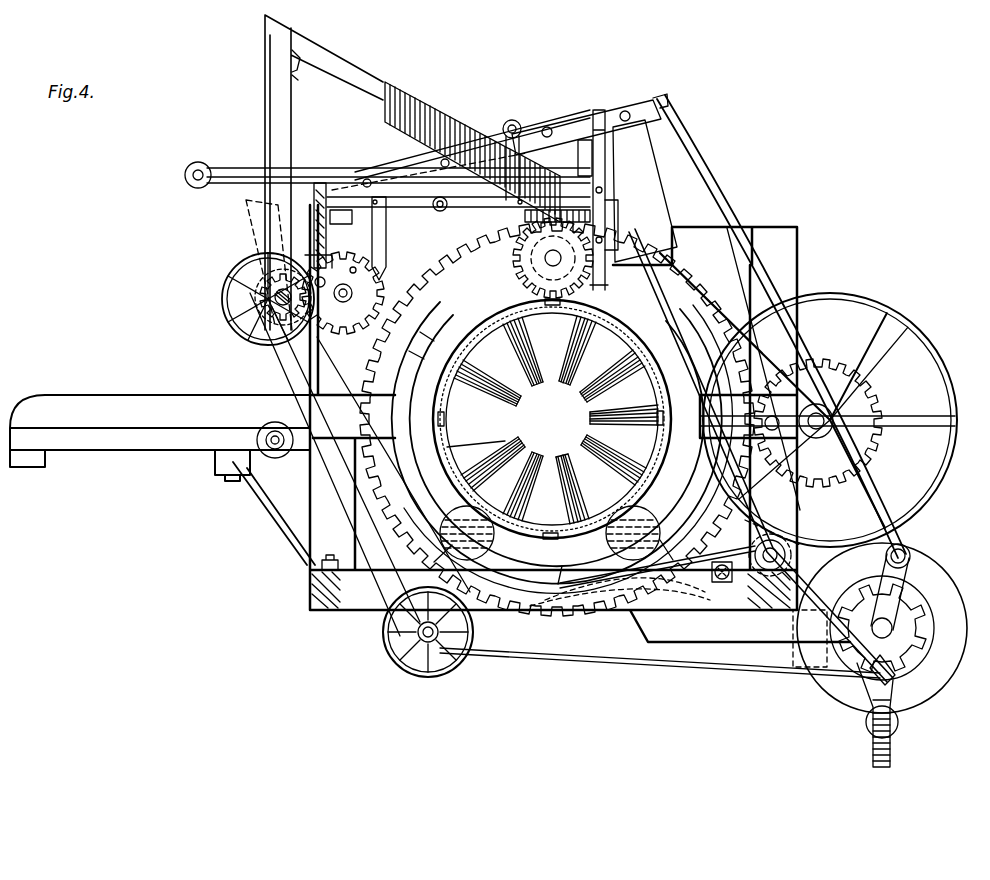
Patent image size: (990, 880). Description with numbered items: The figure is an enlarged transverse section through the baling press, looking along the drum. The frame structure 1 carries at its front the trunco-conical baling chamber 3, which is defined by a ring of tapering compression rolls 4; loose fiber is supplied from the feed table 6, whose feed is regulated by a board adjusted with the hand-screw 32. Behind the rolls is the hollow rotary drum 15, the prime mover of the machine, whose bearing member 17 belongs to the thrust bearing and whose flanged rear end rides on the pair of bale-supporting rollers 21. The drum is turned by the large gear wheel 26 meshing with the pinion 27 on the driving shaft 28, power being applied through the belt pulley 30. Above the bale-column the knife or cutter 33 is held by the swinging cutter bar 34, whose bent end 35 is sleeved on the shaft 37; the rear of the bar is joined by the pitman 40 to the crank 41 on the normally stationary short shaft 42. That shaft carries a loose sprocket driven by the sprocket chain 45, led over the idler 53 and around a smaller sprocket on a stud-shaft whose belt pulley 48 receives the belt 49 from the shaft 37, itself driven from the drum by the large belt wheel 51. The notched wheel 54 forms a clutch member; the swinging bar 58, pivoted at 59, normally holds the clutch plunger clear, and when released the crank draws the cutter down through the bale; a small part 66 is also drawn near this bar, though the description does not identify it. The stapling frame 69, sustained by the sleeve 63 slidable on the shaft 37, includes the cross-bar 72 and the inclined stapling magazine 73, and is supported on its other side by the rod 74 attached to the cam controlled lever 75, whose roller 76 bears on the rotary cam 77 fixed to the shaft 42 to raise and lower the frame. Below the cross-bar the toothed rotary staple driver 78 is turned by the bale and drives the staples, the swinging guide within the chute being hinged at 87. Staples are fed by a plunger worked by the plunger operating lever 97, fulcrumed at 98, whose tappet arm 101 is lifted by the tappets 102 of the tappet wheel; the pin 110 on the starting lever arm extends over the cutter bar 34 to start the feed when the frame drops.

The frame structure 1 is at (580, 421).
The baling chamber 3 is at (552, 419).
The compression rolls 4 is at (552, 420).
The feed table 6 is at (160, 426).
The rotary drum 15 is at (660, 330).
The bearing member 17 is at (405, 360).
The bale-supporting rollers 21 is at (495, 540).
The gear wheel 26 is at (735, 310).
The pinion 27 is at (832, 360).
The driving shaft 28 is at (840, 415).
The belt pulley 30 is at (868, 300).
The hand-screw 32 is at (262, 430).
The knife or cutter 33 is at (606, 152).
The cutter bar 34 is at (565, 130).
The end of cutter bar 35 is at (258, 222).
The shaft 37 is at (285, 318).
The pitman 40 is at (705, 190).
The crank 41 is at (908, 560).
The short shaft 42 is at (915, 660).
The sprocket chain 45 is at (635, 676).
The belt pulley 48 is at (460, 670).
The belt 49 is at (310, 485).
The belt wheel 51 is at (240, 272).
The idler 53 is at (800, 555).
The notched wheel 54 is at (925, 625).
The swinging bar 58 is at (620, 592).
The pivot 59 is at (330, 558).
The sleeve 63 is at (275, 330).
The nut 66 is at (720, 582).
The stapling frame 69 is at (298, 134).
The cross-bar 72 is at (480, 210).
The stapling magazine 73 is at (362, 72).
The rod 74 is at (705, 320).
The cam controlled lever 75 is at (890, 755).
The roller 76 is at (898, 725).
The rotary cam 77 is at (930, 585).
The rotary staple driver 78 is at (510, 262).
The hinge 87 is at (600, 112).
The plunger operating lever 97 is at (395, 172).
The fulcrum 98 is at (195, 183).
The tappet arm 101 is at (327, 236).
The tappets 102 is at (388, 299).
The pin 110 is at (511, 151).